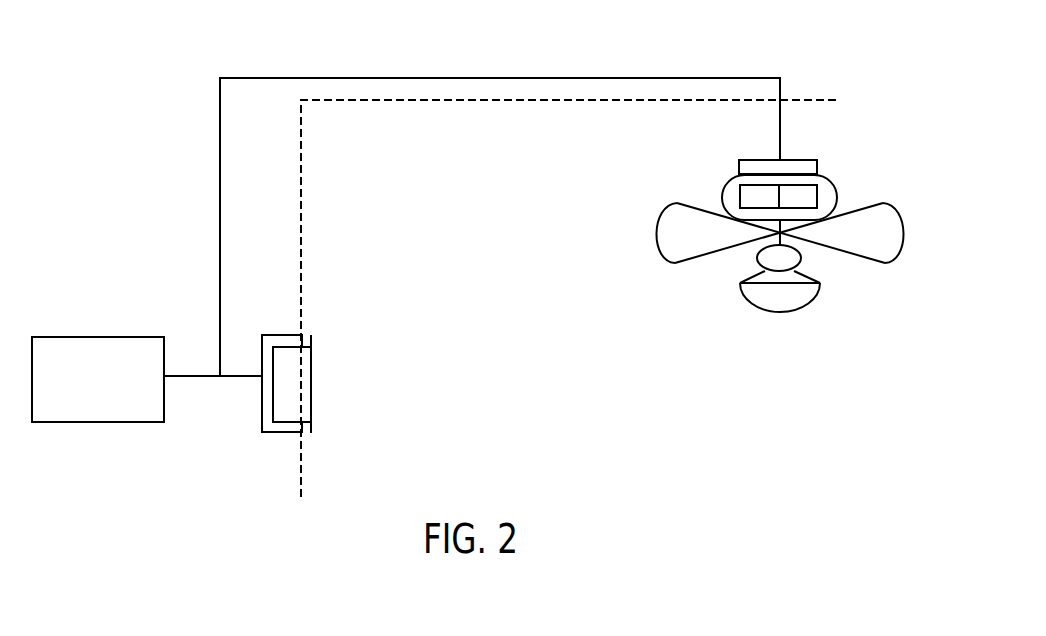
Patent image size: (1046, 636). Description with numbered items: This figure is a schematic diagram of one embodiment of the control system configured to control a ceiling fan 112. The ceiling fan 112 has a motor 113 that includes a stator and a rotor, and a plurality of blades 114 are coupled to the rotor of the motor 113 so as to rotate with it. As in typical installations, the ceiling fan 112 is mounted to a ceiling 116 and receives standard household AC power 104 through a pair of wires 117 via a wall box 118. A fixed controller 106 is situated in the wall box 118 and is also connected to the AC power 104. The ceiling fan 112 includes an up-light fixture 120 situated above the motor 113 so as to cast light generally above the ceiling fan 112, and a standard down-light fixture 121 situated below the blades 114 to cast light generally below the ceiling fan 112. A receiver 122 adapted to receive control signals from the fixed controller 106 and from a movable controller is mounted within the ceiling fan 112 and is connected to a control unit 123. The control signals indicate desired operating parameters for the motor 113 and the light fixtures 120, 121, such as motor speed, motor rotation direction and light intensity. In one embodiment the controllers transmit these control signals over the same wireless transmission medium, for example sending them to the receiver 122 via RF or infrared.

The AC power 104 is at (110, 360).
The fixed controller 106 is at (341, 384).
The ceiling fan 112 is at (737, 238).
The motor 113 is at (831, 193).
The blades 114 is at (738, 242).
The ceiling 116 is at (614, 258).
The wires 117 is at (490, 197).
The wall box 118 is at (237, 402).
The up-light fixture 120 is at (751, 146).
The down-light fixture 121 is at (758, 314).
The receiver 122 is at (712, 178).
The control unit 123 is at (852, 166).